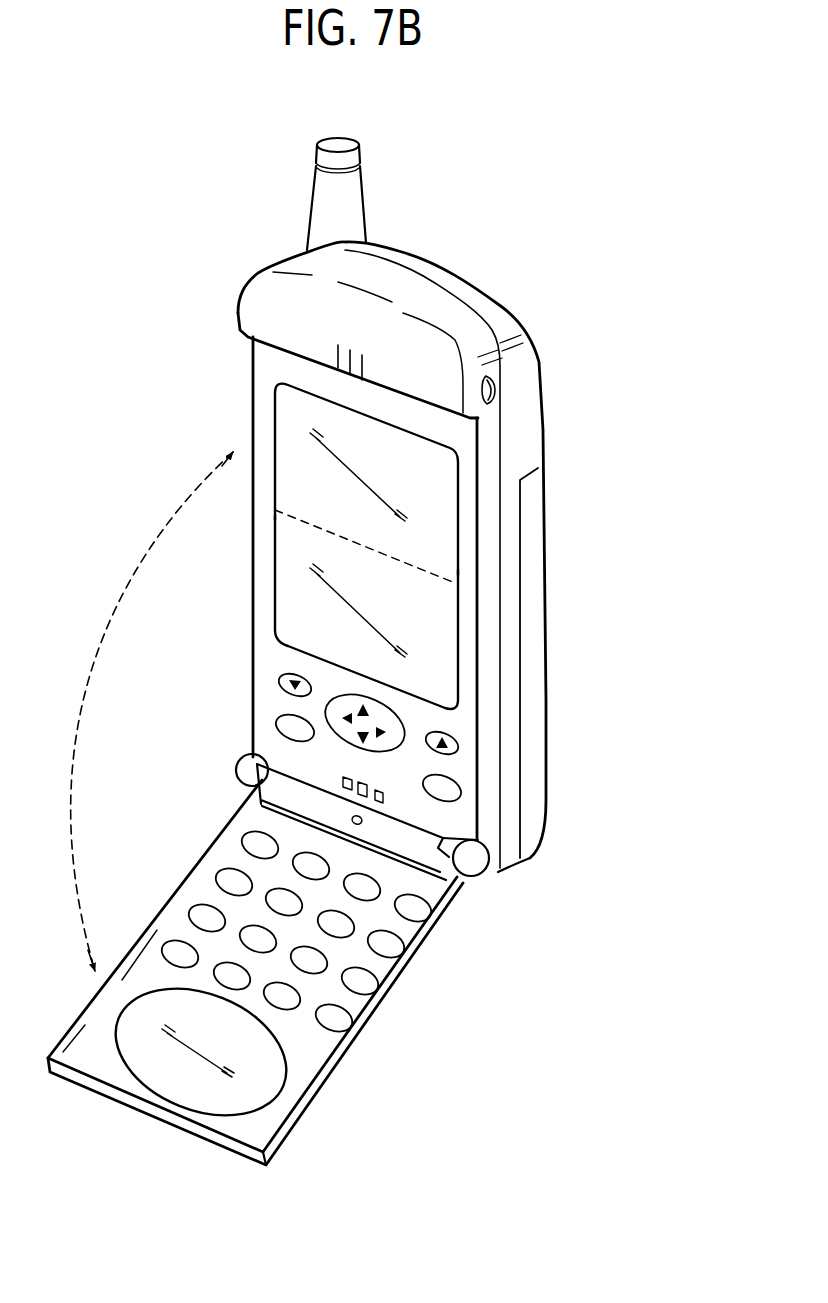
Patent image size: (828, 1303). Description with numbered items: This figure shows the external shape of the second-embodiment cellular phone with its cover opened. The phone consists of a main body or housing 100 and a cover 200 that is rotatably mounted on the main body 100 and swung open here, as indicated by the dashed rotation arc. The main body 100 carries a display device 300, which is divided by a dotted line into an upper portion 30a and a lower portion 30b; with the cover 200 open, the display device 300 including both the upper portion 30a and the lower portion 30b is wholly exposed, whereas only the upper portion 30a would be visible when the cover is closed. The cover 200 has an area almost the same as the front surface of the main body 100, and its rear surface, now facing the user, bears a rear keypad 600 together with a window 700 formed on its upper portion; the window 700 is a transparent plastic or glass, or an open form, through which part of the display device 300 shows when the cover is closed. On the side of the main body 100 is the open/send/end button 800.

The main body 100 is at (479, 509).
The cover 200 is at (266, 988).
The display device 300 is at (498, 546).
The upper portion 30a is at (430, 533).
The lower portion 30b is at (423, 637).
The rear keypad 600 is at (378, 965).
The window 700 is at (172, 1084).
The open/send/end button 800 is at (496, 388).